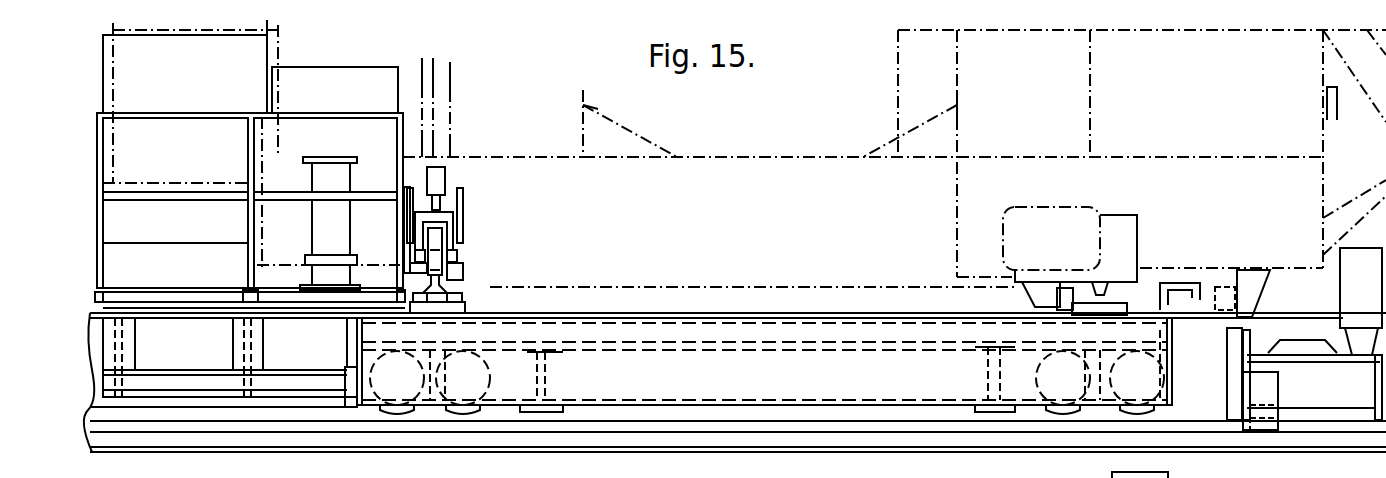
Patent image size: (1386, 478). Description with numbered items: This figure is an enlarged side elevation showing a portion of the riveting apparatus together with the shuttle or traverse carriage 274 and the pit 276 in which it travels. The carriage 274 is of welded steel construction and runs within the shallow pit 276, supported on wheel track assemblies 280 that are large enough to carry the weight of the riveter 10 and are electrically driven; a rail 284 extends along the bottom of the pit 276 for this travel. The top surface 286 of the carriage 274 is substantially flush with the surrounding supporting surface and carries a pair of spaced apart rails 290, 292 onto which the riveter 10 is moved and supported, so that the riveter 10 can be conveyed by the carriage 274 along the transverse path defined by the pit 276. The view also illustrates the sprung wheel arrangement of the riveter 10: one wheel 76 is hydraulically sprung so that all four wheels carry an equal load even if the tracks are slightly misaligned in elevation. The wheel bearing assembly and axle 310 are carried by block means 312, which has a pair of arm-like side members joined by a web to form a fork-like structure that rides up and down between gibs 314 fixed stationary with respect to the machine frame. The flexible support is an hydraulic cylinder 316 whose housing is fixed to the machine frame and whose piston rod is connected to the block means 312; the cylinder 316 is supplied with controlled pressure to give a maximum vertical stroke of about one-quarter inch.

The riveter 10 is at (712, 218).
The wheel 76 is at (412, 266).
The carriage 274 is at (734, 380).
The pit 276 is at (250, 407).
The wheel track assemblies 280 is at (465, 418).
The rail 284 is at (313, 413).
The top surface 286 is at (637, 315).
The rail 290 is at (445, 288).
The rail 292 is at (1108, 275).
The wheel bearing assembly and axle 310 is at (457, 247).
The block means 312 is at (450, 222).
The gibs 314 is at (465, 200).
The hydraulic cylinder 316 is at (440, 176).